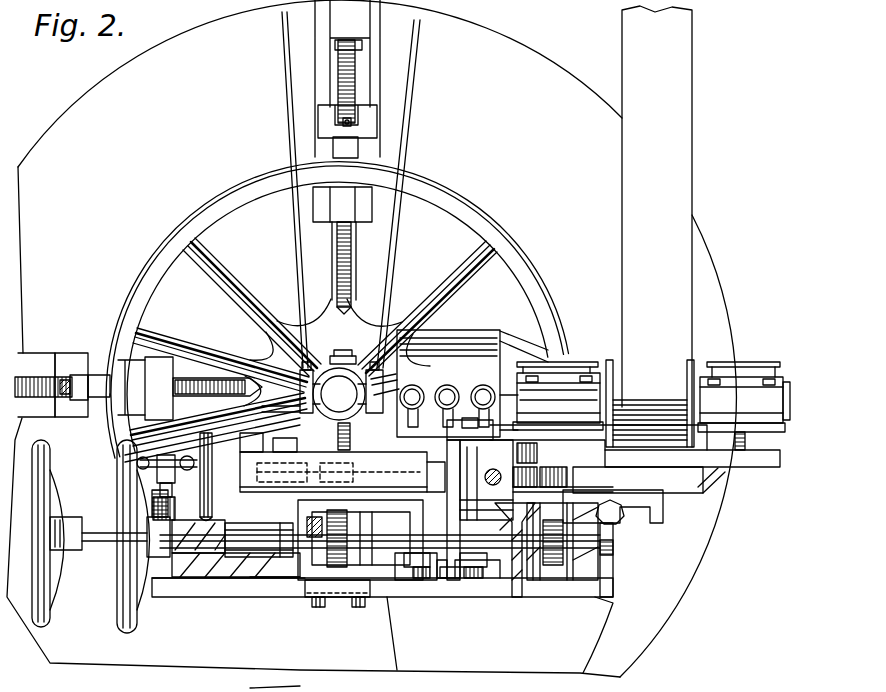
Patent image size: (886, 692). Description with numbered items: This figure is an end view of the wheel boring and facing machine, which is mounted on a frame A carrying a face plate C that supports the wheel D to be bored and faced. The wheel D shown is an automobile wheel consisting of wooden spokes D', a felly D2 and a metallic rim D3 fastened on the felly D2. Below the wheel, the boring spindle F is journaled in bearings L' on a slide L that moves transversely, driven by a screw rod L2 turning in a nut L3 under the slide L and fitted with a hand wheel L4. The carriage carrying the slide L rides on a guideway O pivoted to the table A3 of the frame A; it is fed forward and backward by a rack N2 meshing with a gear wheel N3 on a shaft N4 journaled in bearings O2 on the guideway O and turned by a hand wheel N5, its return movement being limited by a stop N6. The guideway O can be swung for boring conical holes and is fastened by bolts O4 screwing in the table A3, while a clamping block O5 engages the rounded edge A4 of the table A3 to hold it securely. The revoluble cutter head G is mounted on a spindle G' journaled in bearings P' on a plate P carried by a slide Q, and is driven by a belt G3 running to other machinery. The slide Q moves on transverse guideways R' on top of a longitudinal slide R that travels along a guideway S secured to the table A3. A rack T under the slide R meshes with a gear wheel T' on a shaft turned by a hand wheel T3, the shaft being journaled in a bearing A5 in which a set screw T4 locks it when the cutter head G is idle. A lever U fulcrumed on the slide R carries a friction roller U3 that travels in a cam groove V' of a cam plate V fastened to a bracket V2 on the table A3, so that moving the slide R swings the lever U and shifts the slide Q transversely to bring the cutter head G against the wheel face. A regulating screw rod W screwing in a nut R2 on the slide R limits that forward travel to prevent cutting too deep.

The frame A is at (473, 662).
The table A3 is at (503, 590).
The rounded off edge A4 is at (280, 580).
The bearing A5 is at (157, 508).
The face plate C is at (371, 344).
The wheel D is at (122, 313).
The spokes D' is at (313, 337).
The felly D2 is at (150, 297).
The rim D3 is at (237, 180).
The boring spindle F is at (341, 400).
The cutter head G is at (448, 370).
The spindle G' is at (524, 374).
The belt G3 is at (673, 142).
The carriage or slide L is at (332, 462).
The bearings L' is at (282, 410).
The screw rod L2 is at (317, 467).
The nut L3 is at (352, 467).
The hand wheel L4 is at (212, 440).
The rack N2 is at (340, 514).
The gear wheel N3 is at (338, 567).
The shaft N4 is at (192, 580).
The hand wheel N5 is at (118, 604).
The stop N6 is at (310, 520).
The guideway O is at (377, 562).
The bearings O2 is at (259, 540).
The bolts O4 is at (413, 555).
The clamping block O5 is at (338, 601).
The plate P is at (692, 473).
The carriage or slide Q is at (698, 484).
The slide or carriage R is at (624, 508).
The transverse guideways R' is at (638, 480).
The nut R2 is at (490, 470).
The longitudinal guideway S is at (607, 563).
The rack T is at (562, 541).
The gear wheel T' is at (551, 573).
The hand wheel T3 is at (57, 533).
The set screw T4 is at (174, 477).
The lever U is at (498, 537).
The friction roller U3 is at (537, 452).
The cam plate V is at (598, 455).
The cam groove V' is at (558, 417).
The bracket V2 is at (470, 578).